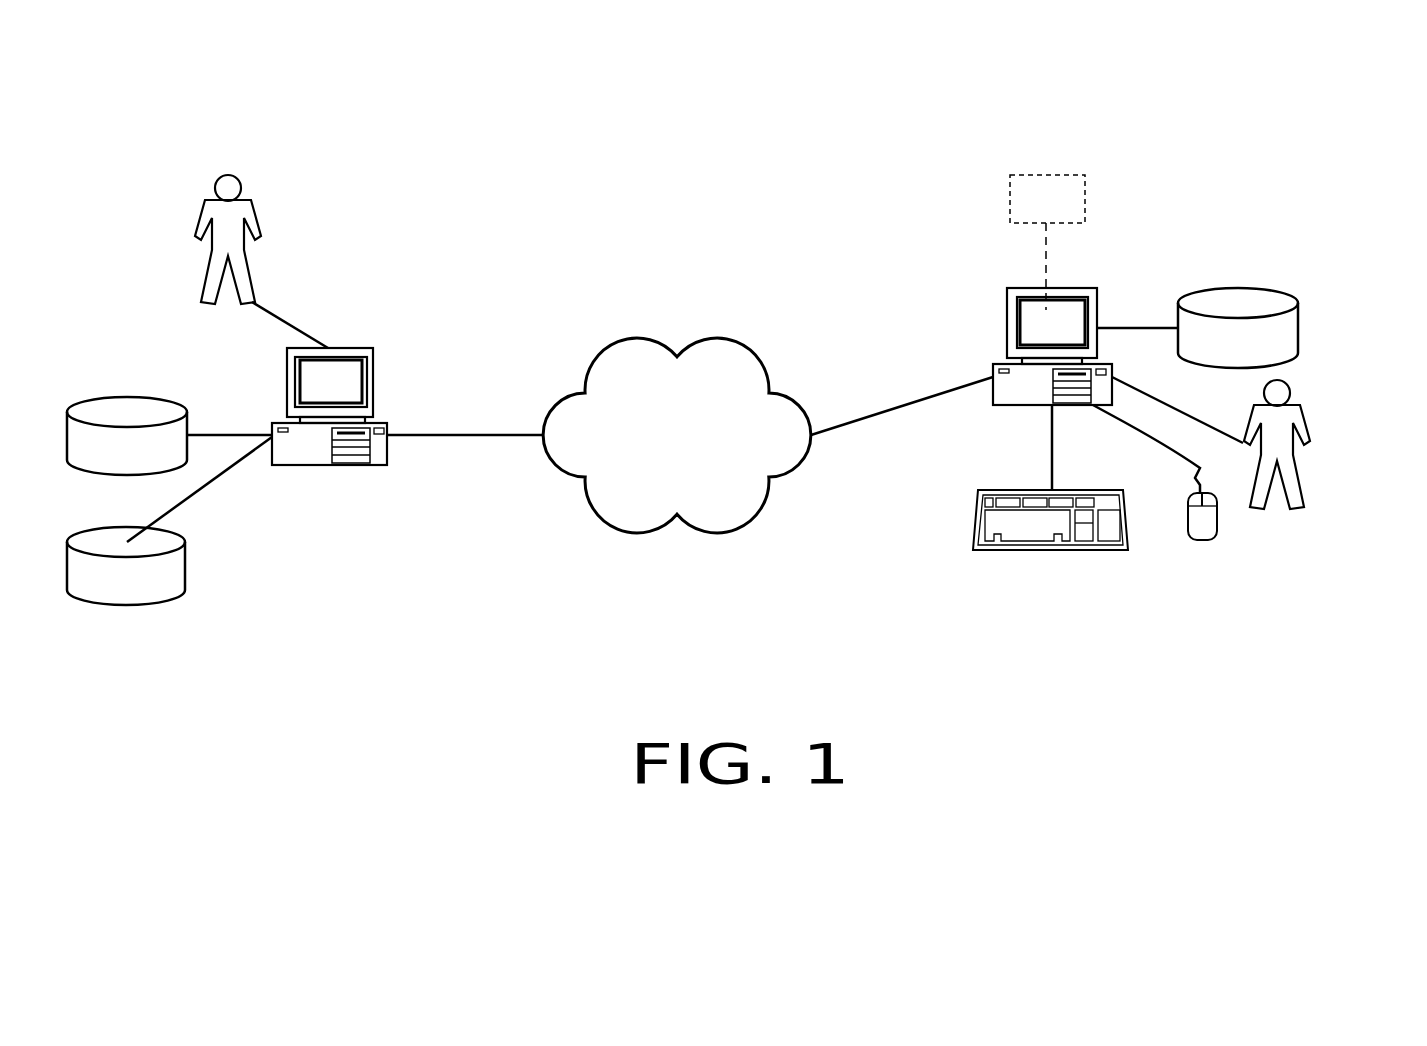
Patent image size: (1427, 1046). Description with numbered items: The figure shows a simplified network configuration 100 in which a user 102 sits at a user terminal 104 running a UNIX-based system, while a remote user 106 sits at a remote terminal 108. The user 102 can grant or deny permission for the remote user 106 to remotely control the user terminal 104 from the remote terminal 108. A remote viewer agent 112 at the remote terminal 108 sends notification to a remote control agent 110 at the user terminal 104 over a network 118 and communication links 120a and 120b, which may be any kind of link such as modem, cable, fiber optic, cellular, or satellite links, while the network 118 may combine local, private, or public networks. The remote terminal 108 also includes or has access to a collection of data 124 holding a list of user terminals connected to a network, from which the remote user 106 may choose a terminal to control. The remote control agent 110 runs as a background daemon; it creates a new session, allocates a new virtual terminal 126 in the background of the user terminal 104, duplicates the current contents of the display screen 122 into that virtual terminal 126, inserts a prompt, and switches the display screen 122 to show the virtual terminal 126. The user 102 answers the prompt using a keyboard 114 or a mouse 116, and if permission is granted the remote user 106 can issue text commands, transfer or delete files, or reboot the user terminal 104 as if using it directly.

The network configuration 100 is at (590, 140).
The user 102 is at (1310, 443).
The user terminal 104 is at (1057, 288).
The remote user 106 is at (235, 176).
The remote terminal 108 is at (373, 348).
The remote control agent 110 is at (1298, 328).
The remote viewer agent 112 is at (130, 395).
The keyboard 114 is at (975, 520).
The mouse 116 is at (1217, 507).
The network 118 is at (640, 338).
The communication link 120a is at (440, 435).
The communication link 120b is at (860, 418).
The display screen 122 is at (1035, 318).
The collection of data 124 is at (185, 563).
The virtual terminal 126 is at (1085, 200).